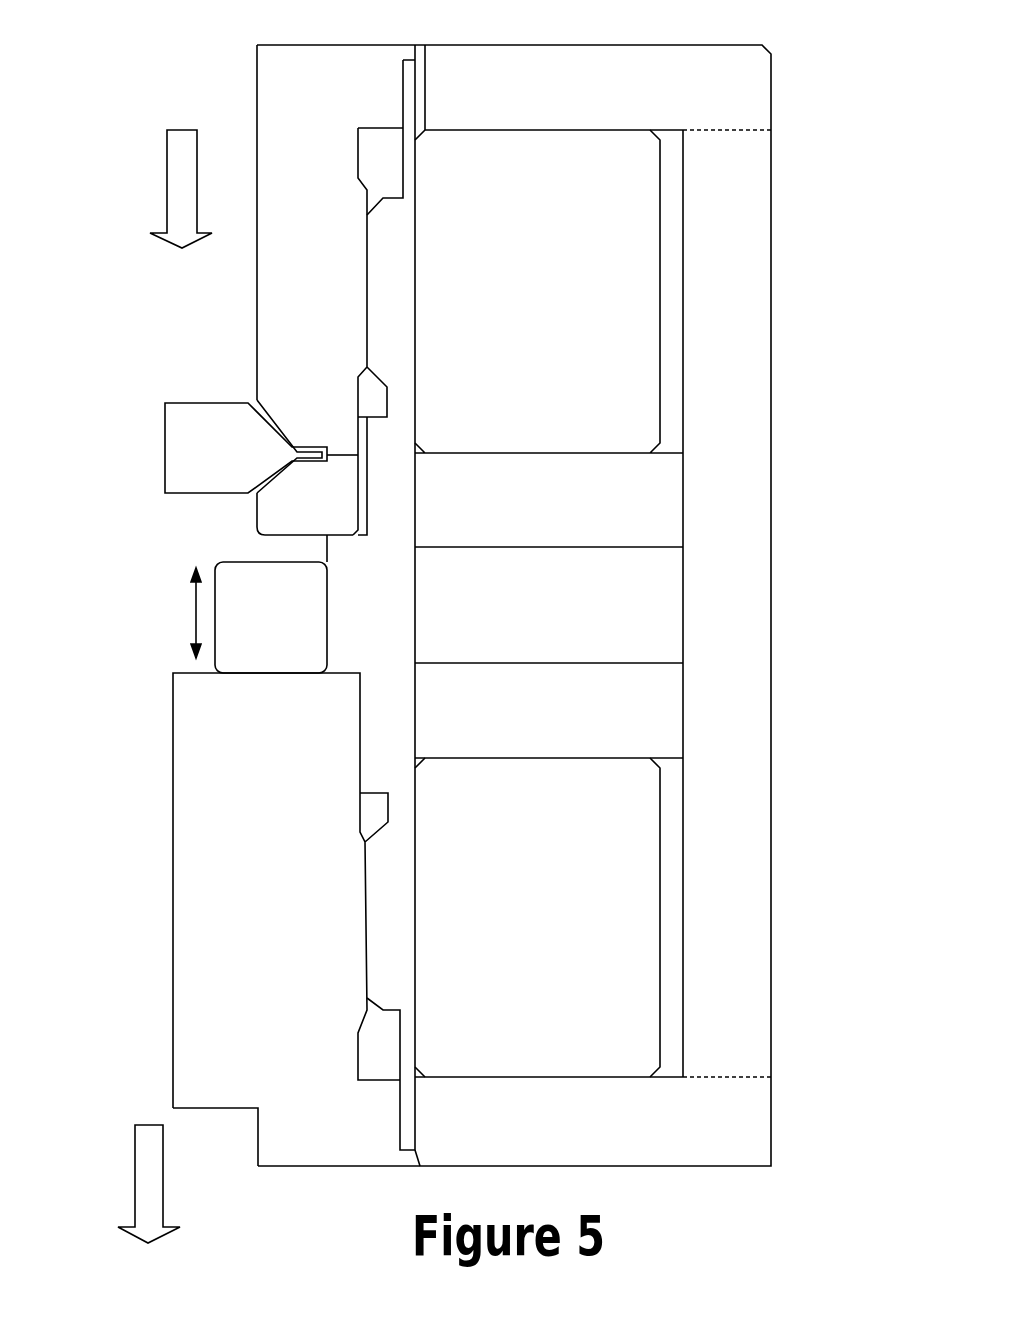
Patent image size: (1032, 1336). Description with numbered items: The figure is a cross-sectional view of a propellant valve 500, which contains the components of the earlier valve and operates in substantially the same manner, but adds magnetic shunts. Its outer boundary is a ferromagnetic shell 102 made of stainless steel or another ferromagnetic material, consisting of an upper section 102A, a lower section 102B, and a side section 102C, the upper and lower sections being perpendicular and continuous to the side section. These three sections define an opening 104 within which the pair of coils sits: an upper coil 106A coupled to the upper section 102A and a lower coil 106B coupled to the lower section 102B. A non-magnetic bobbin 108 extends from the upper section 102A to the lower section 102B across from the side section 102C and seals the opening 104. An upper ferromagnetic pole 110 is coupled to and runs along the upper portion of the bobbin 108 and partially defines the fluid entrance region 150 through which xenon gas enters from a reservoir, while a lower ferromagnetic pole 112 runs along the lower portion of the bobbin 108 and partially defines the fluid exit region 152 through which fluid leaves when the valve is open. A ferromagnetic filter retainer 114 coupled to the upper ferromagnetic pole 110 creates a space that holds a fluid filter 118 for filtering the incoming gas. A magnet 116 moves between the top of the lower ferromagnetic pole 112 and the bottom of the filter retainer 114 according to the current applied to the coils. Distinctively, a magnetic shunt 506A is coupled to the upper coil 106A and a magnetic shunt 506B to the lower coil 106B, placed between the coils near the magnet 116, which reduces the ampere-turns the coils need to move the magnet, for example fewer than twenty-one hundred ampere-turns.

The propellant valve 500 is at (98, 36).
The ferromagnetic shell 102 is at (750, 412).
The upper section 102A is at (572, 94).
The lower section 102B is at (572, 1135).
The side section 102C is at (752, 565).
The opening 104 is at (564, 612).
The upper coil 106A is at (568, 283).
The lower coil 106B is at (565, 910).
The bobbin 108 is at (389, 609).
The upper ferromagnetic pole 110 is at (325, 198).
The lower ferromagnetic pole 112 is at (289, 900).
The ferromagnetic filter retainer 114 is at (334, 510).
The magnet 116 is at (289, 629).
The fluid filter 118 is at (231, 462).
The fluid entrance region 150 is at (167, 177).
The fluid exit region 152 is at (135, 1172).
The magnetic shunt 506A is at (570, 512).
The magnetic shunt 506B is at (566, 725).